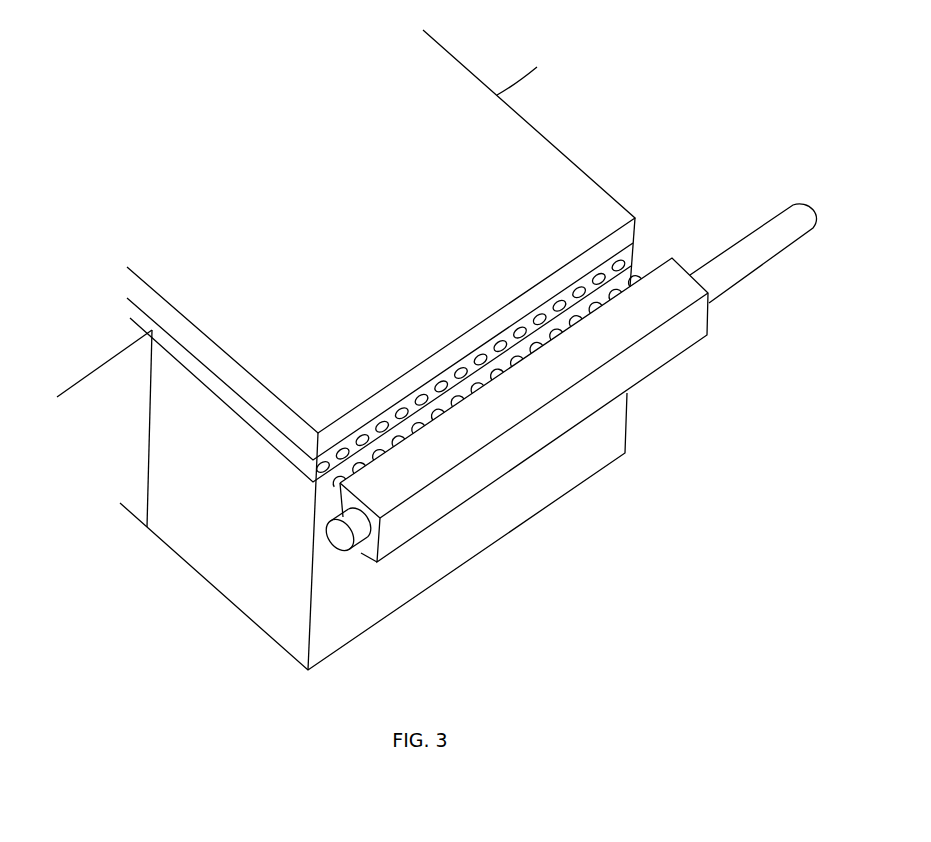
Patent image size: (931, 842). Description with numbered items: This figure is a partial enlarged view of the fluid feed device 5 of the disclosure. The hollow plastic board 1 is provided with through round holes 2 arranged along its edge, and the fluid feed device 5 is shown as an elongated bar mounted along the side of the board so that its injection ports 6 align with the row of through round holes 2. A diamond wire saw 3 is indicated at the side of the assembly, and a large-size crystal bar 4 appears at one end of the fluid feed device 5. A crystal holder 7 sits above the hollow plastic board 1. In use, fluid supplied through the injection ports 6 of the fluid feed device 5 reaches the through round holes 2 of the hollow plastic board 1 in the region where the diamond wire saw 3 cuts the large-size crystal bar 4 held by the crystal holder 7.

The hollow plastic board 1 is at (218, 385).
The through round holes 2 is at (631, 255).
The diamond wire saw 3 is at (108, 360).
The large-size crystal bar 4 is at (387, 577).
The fluid feed device 5 is at (478, 433).
The injection ports 6 is at (543, 347).
The crystal holder 7 is at (527, 177).